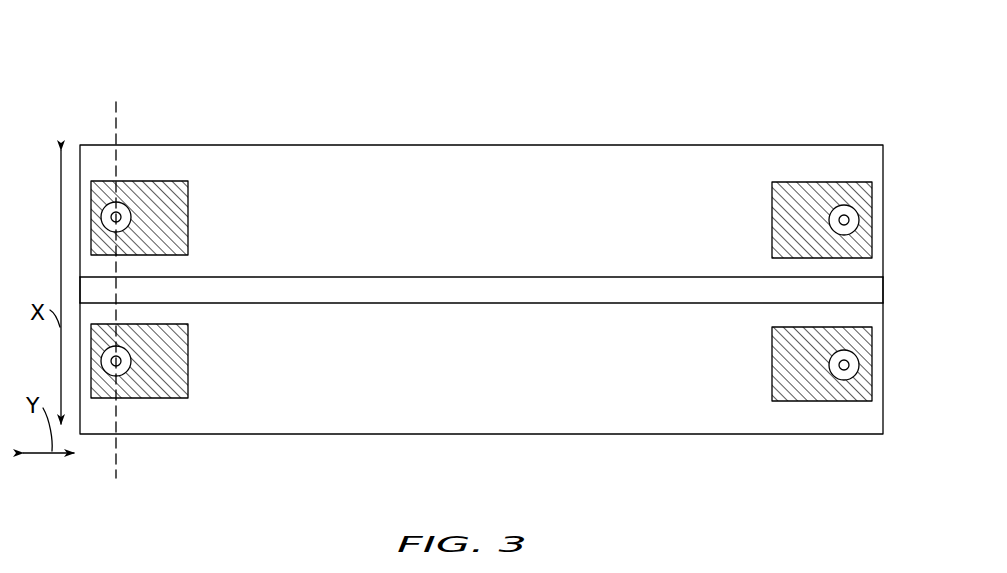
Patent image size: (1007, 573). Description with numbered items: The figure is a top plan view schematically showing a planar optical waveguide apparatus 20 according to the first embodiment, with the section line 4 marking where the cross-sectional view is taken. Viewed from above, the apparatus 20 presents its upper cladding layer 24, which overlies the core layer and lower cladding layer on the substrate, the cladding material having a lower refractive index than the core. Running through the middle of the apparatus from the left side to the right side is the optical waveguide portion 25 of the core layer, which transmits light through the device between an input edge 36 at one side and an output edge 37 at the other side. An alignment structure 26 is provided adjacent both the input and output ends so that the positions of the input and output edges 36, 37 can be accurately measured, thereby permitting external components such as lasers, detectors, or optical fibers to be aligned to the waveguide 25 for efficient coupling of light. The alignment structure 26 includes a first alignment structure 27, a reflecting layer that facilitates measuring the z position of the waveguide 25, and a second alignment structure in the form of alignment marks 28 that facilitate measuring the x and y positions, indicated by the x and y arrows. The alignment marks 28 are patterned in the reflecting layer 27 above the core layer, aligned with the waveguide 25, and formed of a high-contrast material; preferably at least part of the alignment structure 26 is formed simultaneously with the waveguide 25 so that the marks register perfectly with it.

The planar optical waveguide apparatus 20 is at (787, 57).
The upper cladding layer 24 is at (400, 157).
The optical waveguide portion 25 is at (460, 277).
The alignment structure 26 is at (240, 250).
The first alignment structure 27 is at (188, 190).
The alignment marks 28 is at (155, 181).
The input edge 36 is at (78, 288).
The output edge 37 is at (884, 283).
The section line 4- 4 is at (116, 102).